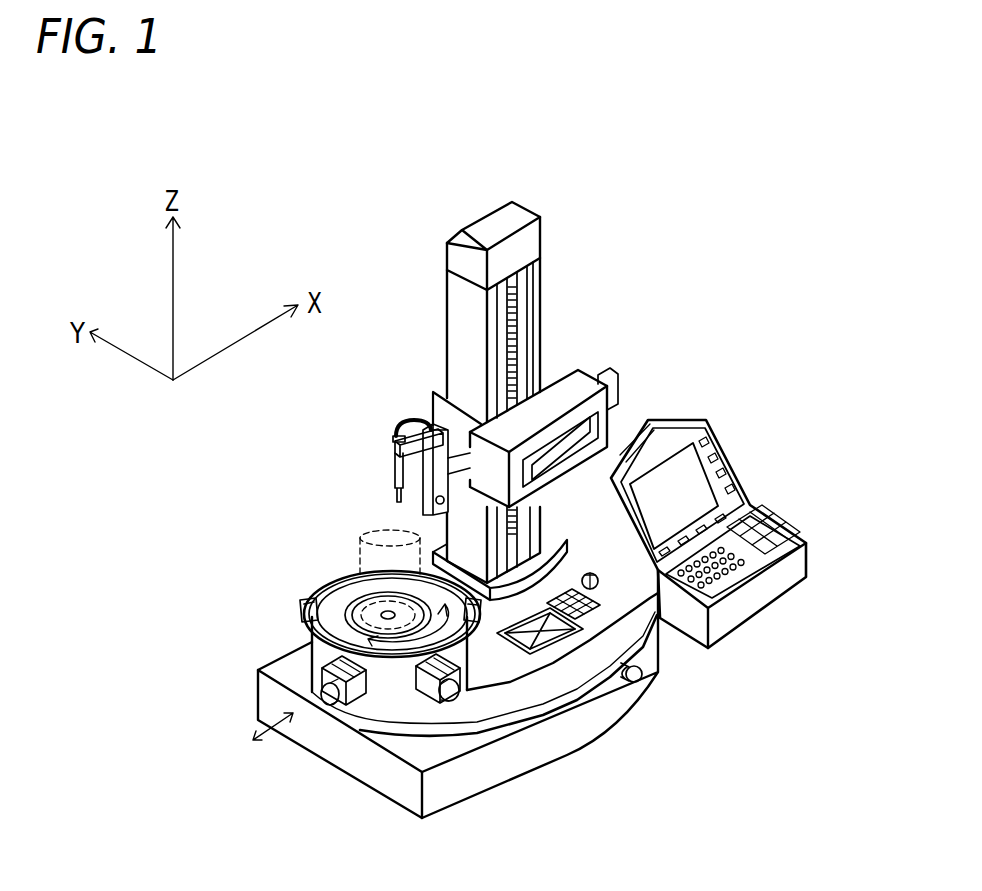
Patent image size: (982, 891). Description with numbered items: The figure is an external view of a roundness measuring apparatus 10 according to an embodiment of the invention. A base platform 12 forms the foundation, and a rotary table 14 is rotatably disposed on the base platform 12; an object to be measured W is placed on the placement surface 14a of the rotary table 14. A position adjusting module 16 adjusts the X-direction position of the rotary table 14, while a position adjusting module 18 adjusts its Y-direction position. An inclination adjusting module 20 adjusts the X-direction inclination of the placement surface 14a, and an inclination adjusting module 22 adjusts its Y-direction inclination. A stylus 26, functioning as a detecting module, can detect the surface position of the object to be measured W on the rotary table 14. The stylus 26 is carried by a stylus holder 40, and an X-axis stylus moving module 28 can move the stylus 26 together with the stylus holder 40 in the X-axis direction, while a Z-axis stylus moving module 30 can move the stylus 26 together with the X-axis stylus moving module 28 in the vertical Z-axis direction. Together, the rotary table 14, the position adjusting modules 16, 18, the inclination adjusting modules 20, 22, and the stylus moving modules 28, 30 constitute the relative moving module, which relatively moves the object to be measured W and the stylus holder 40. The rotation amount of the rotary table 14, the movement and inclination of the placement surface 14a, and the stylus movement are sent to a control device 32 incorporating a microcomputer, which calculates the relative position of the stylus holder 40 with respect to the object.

The roundness measuring apparatus 10 is at (767, 278).
The base platform 12 is at (457, 788).
The rotary table 14 is at (320, 648).
The placement surface 14a is at (348, 598).
The position adjusting module 16 is at (473, 632).
The position adjusting module 18 is at (318, 600).
The inclination adjusting module 20 is at (330, 703).
The inclination adjusting module 22 is at (465, 693).
The stylus 26 is at (397, 493).
The X-axis stylus moving module 28 is at (573, 366).
The Z-axis stylus moving module 30 is at (455, 325).
The control device 32 is at (727, 465).
The stylus holder 40 is at (392, 467).
The object to be measured W is at (366, 510).